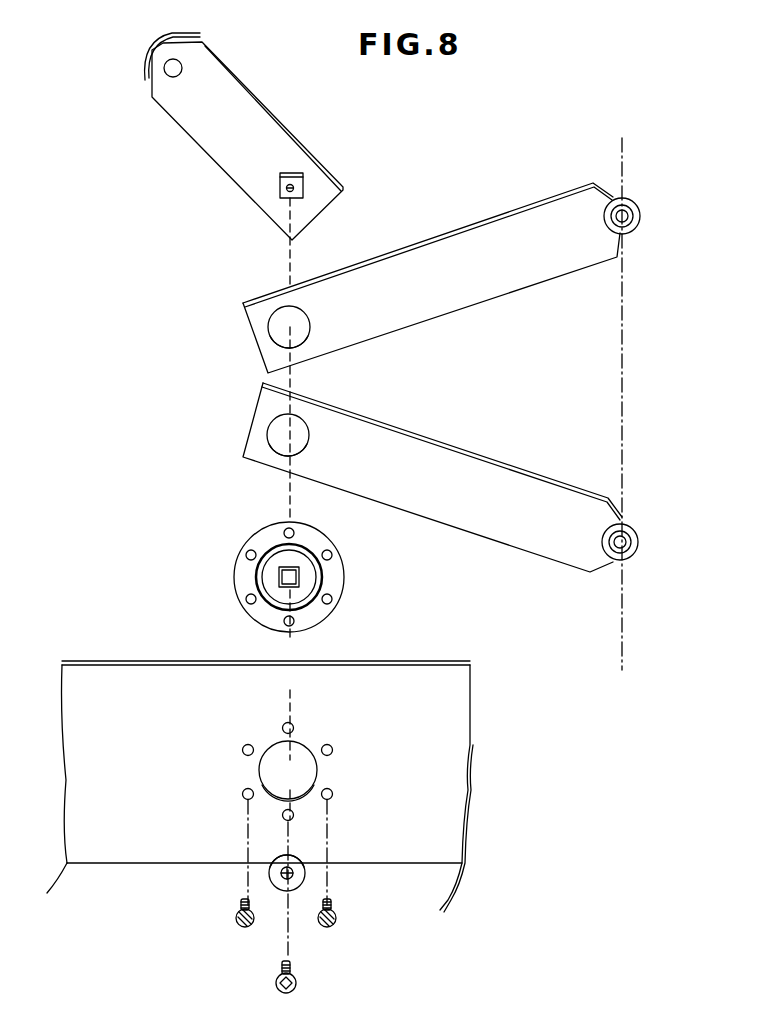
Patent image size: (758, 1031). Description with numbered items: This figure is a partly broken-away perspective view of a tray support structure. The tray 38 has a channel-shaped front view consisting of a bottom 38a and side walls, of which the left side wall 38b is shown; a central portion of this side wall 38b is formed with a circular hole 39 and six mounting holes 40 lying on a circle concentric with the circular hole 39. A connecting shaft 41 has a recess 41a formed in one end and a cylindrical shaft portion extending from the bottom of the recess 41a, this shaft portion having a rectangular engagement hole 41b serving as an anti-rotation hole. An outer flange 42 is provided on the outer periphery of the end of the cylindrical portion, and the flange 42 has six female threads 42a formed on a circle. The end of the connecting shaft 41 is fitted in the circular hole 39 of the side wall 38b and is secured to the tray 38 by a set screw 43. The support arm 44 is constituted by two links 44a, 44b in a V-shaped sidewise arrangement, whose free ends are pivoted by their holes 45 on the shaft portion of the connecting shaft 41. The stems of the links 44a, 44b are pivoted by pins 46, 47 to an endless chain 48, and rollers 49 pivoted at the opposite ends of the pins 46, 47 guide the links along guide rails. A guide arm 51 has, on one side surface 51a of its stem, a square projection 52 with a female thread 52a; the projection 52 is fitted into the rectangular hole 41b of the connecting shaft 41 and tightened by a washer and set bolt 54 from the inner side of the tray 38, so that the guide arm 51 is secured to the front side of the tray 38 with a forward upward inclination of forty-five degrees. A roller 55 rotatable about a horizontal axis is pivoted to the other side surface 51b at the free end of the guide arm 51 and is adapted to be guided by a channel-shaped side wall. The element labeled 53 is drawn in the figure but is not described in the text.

The tray 38 is at (288, 753).
The bottom 38a is at (440, 885).
The left side wall 38b is at (185, 680).
The circular hole 39 is at (312, 750).
The mounting holes 40 is at (252, 745).
The connecting shaft 41 is at (285, 582).
The recess 41a is at (300, 597).
The rectangular engagement hole 41b is at (297, 580).
The outer flange 42 is at (250, 570).
The female threads 42a is at (247, 537).
The set screw 43 is at (236, 917).
The support arm 44 is at (463, 374).
The link 44a is at (508, 528).
The link 44b is at (493, 233).
The holes 45 is at (302, 333).
The pin 46 is at (623, 218).
The pin 47 is at (627, 540).
The endless chain 48 is at (624, 313).
The rollers 49 is at (634, 206).
The guide arm 51 is at (273, 141).
The side surface 51a is at (320, 187).
The side surface 51b is at (242, 80).
The square projection 52 is at (282, 178).
The female thread 52a is at (288, 193).
The bolt 53 is at (297, 883).
The set bolt 54 is at (297, 983).
The roller 55 is at (170, 35).